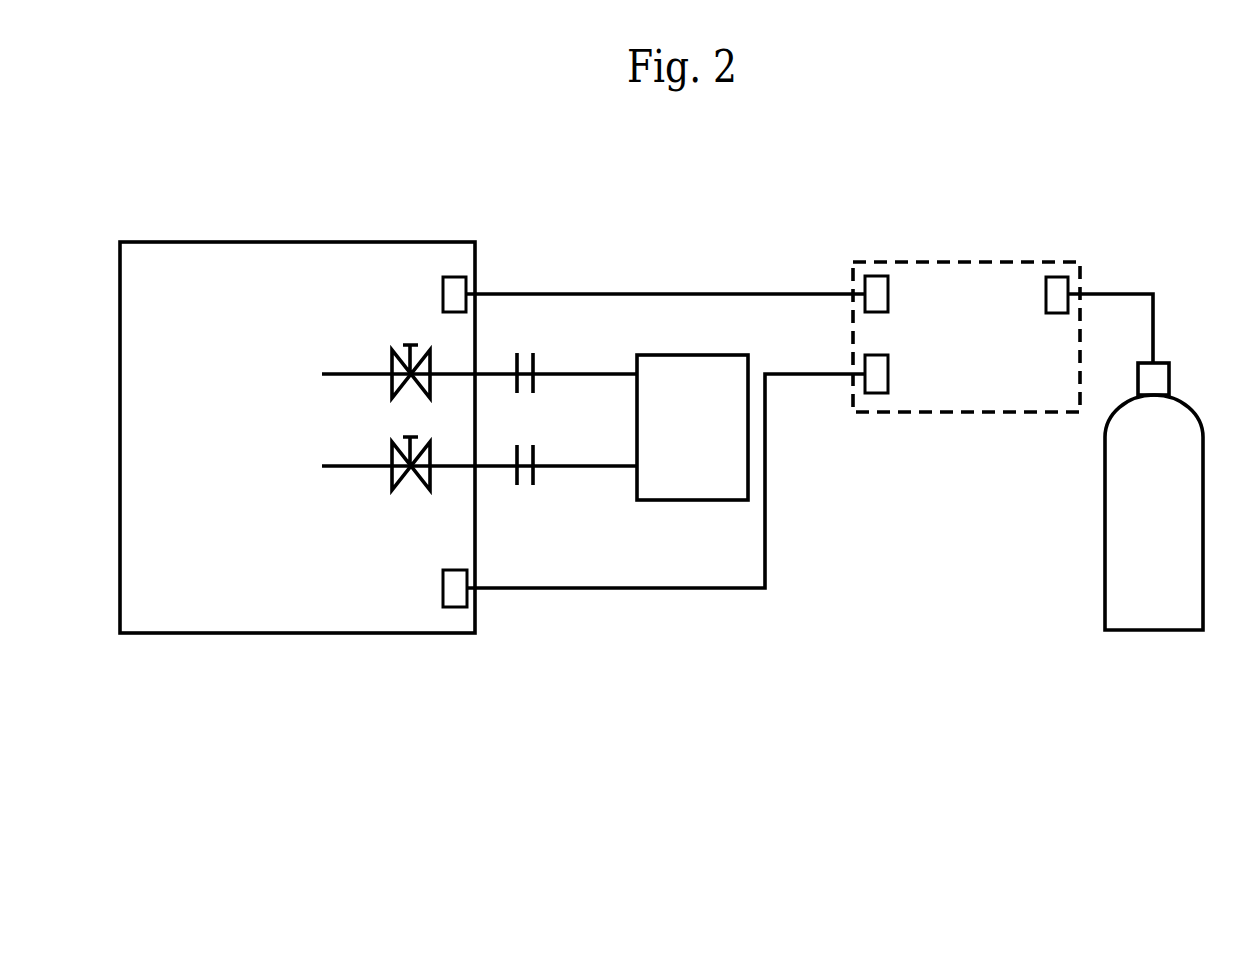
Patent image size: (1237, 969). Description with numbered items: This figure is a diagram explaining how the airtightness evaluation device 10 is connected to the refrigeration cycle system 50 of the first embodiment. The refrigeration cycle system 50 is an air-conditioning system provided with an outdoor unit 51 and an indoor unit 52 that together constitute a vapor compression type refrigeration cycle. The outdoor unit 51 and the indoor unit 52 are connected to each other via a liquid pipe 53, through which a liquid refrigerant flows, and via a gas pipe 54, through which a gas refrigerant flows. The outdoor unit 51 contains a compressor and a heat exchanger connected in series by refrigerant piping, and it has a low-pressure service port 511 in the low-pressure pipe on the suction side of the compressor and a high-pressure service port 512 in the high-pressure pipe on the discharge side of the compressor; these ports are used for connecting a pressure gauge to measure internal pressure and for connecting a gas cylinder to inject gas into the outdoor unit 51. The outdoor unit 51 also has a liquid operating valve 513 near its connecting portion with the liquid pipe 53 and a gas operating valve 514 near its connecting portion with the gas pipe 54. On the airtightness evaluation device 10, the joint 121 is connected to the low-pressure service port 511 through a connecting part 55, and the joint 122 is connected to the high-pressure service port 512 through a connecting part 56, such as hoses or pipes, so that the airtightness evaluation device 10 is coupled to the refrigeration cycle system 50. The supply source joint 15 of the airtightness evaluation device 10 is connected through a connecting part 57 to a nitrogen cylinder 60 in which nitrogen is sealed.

The refrigeration cycle system 50 is at (398, 165).
The outdoor unit 51 is at (300, 242).
The low-pressure service port 511 is at (452, 277).
The high-pressure service port 512 is at (458, 607).
The liquid operating valve 513 is at (432, 353).
The gas operating valve 514 is at (423, 480).
The indoor unit 52 is at (748, 366).
The liquid pipe 53 is at (572, 374).
The gas pipe 54 is at (572, 466).
The connecting part 55 is at (735, 294).
The connecting part 56 is at (765, 466).
The connecting part 57 is at (1155, 316).
The airtightness evaluation device 10 is at (955, 262).
The joint 121 is at (878, 276).
The joint 122 is at (878, 393).
The supply source joint 15 is at (1067, 280).
The nitrogen cylinder 60 is at (1170, 373).